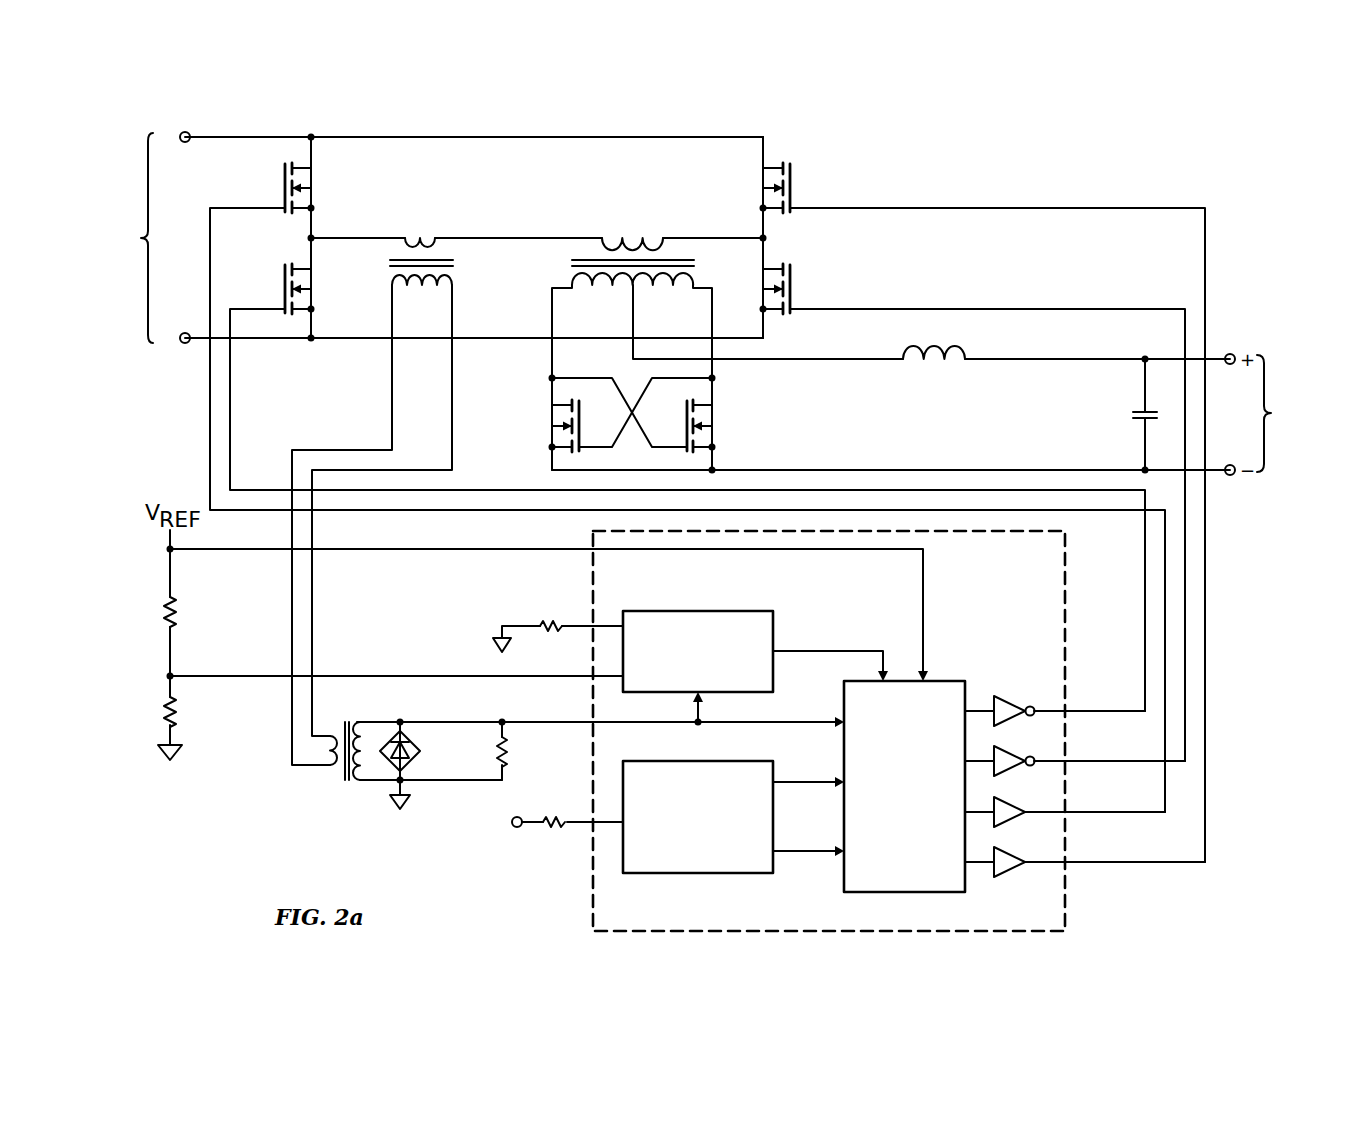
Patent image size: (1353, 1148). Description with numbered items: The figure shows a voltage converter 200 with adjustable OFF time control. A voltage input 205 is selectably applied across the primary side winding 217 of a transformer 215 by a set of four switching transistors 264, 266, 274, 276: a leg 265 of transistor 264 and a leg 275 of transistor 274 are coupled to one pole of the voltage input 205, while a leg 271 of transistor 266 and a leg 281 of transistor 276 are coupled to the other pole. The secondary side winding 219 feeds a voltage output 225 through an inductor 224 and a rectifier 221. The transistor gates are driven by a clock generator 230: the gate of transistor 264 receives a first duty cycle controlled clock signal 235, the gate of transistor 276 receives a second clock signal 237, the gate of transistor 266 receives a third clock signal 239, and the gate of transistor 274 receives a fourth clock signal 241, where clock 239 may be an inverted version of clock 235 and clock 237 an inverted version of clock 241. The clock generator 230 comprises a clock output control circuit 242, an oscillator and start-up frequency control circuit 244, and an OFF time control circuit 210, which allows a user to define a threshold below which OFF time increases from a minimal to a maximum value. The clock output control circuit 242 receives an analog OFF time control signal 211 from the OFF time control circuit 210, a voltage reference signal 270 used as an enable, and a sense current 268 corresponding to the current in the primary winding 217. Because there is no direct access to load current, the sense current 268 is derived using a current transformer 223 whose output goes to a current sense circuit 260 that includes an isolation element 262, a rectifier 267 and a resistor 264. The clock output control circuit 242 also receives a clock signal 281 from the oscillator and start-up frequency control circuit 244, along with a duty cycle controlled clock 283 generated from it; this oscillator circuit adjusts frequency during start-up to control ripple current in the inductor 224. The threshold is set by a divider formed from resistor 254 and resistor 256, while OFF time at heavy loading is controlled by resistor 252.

The voltage converter 200 is at (1106, 170).
The voltage input 205 is at (432, 241).
The leg of transistor 264 265 is at (316, 152).
The leg of transistor 266 271 is at (316, 325).
The transistor 264 is at (283, 178).
The transistor 266 is at (283, 278).
The current transformer 223 is at (470, 275).
The transformer 215 is at (727, 321).
The primary side winding 217 is at (640, 246).
The secondary side winding 219 is at (608, 289).
The rectifier 221 is at (732, 411).
The inductor 224 is at (944, 366).
The voltage output 225 is at (1288, 413).
The leg of transistor 274 275 is at (767, 152).
The transistor 274 is at (793, 178).
The transistor 276 is at (793, 278).
The leg of transistor 276 / clock signal 281 is at (767, 324).
The third duty cycle controlled clock signal 239 is at (1143, 578).
The fourth duty cycle controlled clock signal 241 is at (1207, 578).
The first duty cycle controlled clock signal 235 is at (1163, 598).
The second duty cycle controlled clock signal 237 is at (1187, 598).
The clock generator 230 is at (1075, 895).
The voltage reference signal 270 is at (926, 618).
The resistor 254 is at (165, 610).
The resistor 256 is at (165, 724).
The resistor 252 is at (540, 622).
The OFF time control circuit 210 is at (690, 610).
The OFF time control signal 211 is at (830, 650).
The sense current 268 is at (798, 720).
The clock output control circuit 242 is at (887, 845).
The oscillator and start-up frequency control circuit 244 is at (690, 876).
The duty cycle controlled clock 283 is at (800, 856).
The current sense circuit 260 is at (392, 792).
The isolation element 262 is at (342, 774).
The rectifier 267 is at (419, 754).